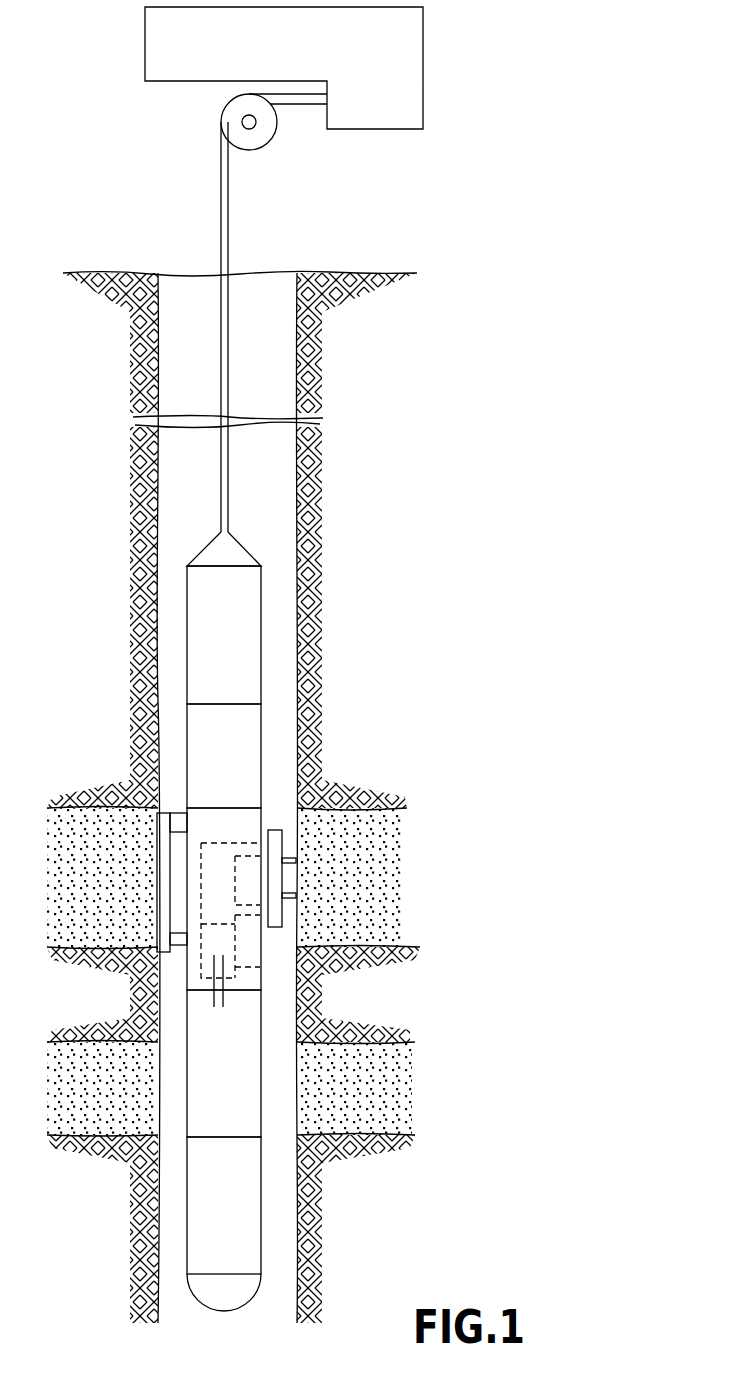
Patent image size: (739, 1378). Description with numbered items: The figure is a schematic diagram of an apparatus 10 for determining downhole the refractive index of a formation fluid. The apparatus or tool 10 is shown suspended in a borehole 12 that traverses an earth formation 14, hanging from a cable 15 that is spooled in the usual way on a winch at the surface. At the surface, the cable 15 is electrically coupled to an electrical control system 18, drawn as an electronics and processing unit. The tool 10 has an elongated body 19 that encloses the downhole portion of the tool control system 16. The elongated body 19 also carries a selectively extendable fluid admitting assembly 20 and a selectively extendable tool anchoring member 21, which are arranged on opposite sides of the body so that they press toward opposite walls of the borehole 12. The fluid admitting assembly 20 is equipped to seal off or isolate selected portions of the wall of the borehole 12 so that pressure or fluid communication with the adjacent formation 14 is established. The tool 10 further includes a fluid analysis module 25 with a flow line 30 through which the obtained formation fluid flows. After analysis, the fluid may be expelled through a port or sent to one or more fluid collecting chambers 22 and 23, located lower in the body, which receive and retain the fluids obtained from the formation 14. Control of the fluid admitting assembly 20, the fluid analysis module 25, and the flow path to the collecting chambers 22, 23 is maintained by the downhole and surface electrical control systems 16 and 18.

The apparatus 10 is at (250, 921).
The borehole 12 is at (298, 325).
The formation 14 is at (391, 896).
The cable 15 is at (221, 200).
The tool control system 16 is at (232, 769).
The electrical control system 18 is at (402, 129).
The elongated body 19 is at (228, 602).
The fluid admitting assembly 20 is at (273, 835).
The tool anchoring member 21 is at (167, 857).
The fluid collecting chamber 22 is at (232, 1097).
The fluid collecting chamber 23 is at (237, 1212).
The fluid analysis module 25 is at (248, 964).
The flow line 30 is at (225, 975).